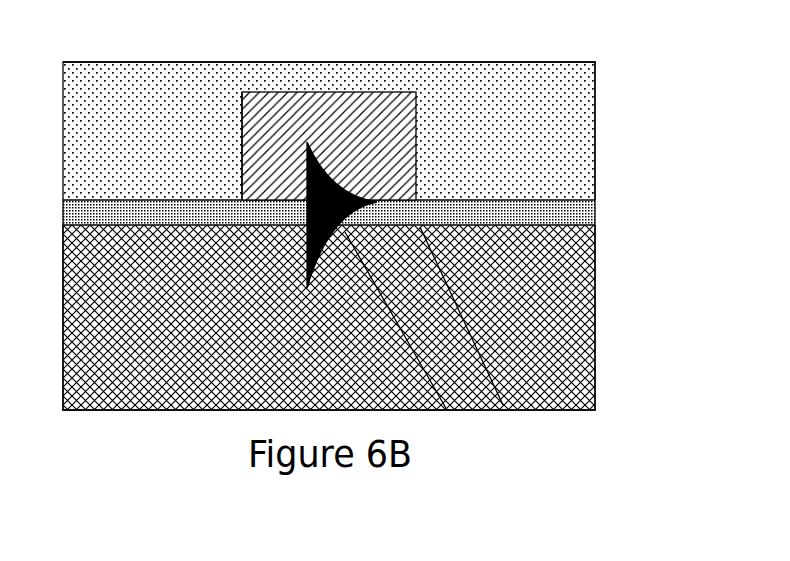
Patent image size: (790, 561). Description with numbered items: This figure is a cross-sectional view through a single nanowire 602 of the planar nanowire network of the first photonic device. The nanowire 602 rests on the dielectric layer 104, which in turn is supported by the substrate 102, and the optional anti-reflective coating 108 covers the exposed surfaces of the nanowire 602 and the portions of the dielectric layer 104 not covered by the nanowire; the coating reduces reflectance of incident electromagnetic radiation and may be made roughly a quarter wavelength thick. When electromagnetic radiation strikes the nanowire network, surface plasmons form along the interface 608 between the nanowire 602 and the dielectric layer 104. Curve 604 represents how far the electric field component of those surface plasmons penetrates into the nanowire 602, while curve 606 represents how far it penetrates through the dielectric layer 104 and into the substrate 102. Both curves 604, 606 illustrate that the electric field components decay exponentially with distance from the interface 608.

The substrate 102 is at (596, 310).
The dielectric layer 104 is at (596, 207).
The anti-reflective coating 108 is at (596, 128).
The nanowire 602 is at (402, 106).
The curve 604 is at (353, 175).
The curve 606 is at (437, 372).
The interface 608 is at (262, 197).